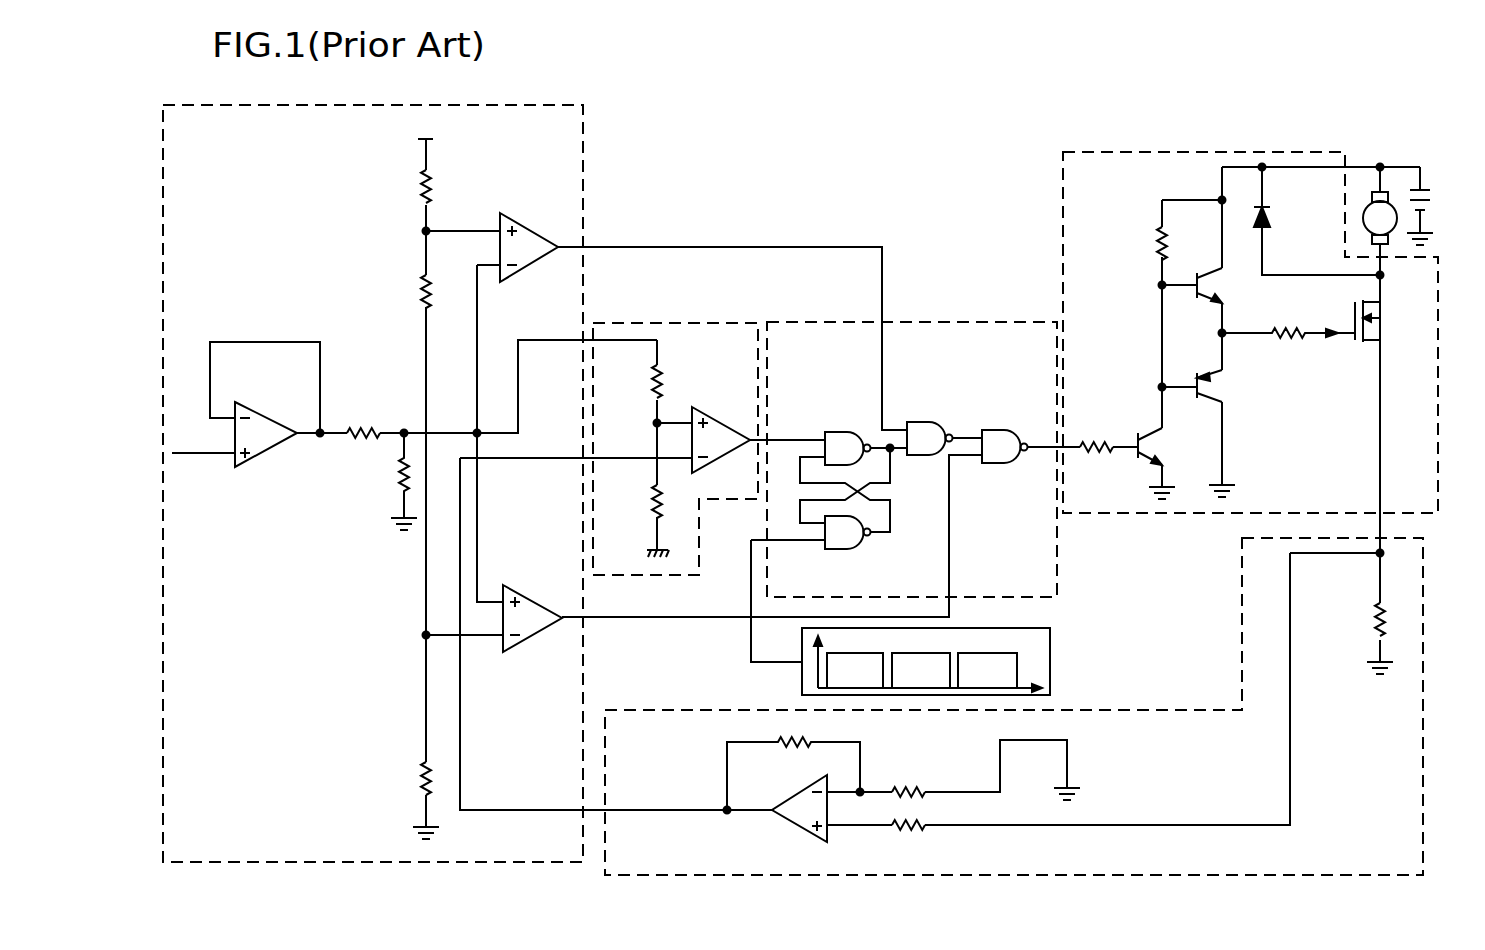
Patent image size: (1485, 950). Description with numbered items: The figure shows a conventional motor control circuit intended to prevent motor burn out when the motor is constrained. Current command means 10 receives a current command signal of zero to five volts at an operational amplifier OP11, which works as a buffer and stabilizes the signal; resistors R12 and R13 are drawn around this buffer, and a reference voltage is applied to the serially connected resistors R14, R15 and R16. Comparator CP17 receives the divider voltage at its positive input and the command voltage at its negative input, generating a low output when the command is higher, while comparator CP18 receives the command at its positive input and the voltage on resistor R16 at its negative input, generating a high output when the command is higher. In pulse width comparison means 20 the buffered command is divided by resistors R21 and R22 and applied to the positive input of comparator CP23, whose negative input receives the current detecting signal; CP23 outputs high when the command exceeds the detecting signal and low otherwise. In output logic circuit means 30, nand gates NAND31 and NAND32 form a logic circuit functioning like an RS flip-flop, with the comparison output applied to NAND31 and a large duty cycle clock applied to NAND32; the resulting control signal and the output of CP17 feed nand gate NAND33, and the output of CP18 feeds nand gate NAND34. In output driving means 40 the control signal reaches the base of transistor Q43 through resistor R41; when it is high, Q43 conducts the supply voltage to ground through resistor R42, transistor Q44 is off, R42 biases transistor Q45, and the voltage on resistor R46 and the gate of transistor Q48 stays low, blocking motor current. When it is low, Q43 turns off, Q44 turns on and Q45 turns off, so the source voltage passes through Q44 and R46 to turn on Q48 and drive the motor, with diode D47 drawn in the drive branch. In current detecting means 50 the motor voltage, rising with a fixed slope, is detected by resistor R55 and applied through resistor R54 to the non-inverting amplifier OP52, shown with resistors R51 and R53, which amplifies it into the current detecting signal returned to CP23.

The current command means 10 is at (585, 162).
The pulse width comparison means 20 is at (686, 323).
The output logic circuit means 30 is at (940, 322).
The output driving means 40 is at (1063, 188).
The current detecting means 50 is at (1242, 612).
The operational amplifier OP11 is at (268, 415).
The resistor R12 is at (362, 418).
The resistor R13 is at (380, 481).
The resistor R14 is at (397, 186).
The resistor R15 is at (397, 291).
The resistor R16 is at (399, 778).
The comparator CP17 is at (537, 213).
The comparator CP18 is at (537, 636).
The resistor R21 is at (632, 381).
The resistor R22 is at (631, 501).
The comparator CP23 is at (720, 413).
The nand gate NAND31 is at (838, 432).
The nand gate NAND32 is at (850, 551).
The nand gate NAND33 is at (922, 422).
The nand gate NAND34 is at (998, 467).
The resistor R41 is at (1094, 434).
The resistor R42 is at (1134, 243).
The transistor Q43 is at (1160, 446).
The transistor Q44 is at (1214, 285).
The transistor Q45 is at (1214, 386).
The resistor R46 is at (1288, 320).
The diode D47 is at (1290, 219).
The transistor Q48 is at (1398, 321).
The resistor R51 is at (793, 761).
The non-inverting amplifier OP52 is at (792, 825).
The resistor R53 is at (909, 778).
The resistor R54 is at (909, 841).
The resistor R55 is at (1353, 620).